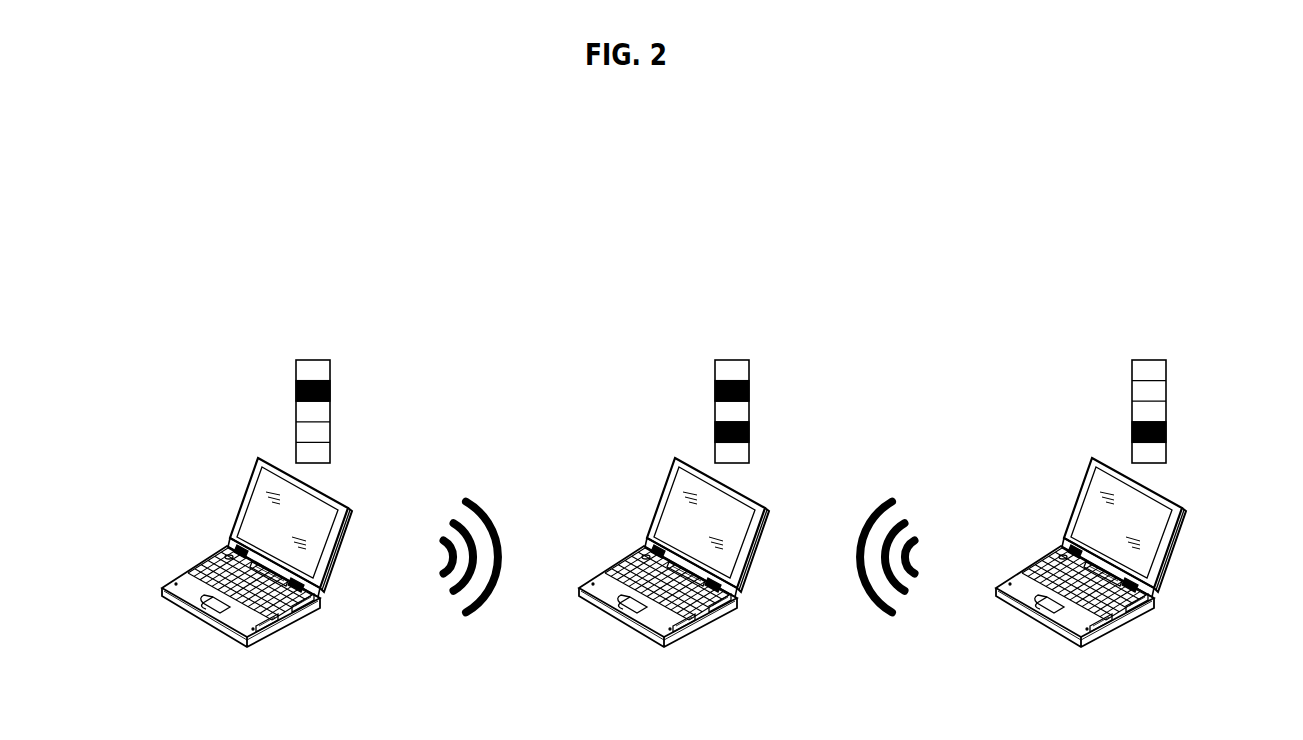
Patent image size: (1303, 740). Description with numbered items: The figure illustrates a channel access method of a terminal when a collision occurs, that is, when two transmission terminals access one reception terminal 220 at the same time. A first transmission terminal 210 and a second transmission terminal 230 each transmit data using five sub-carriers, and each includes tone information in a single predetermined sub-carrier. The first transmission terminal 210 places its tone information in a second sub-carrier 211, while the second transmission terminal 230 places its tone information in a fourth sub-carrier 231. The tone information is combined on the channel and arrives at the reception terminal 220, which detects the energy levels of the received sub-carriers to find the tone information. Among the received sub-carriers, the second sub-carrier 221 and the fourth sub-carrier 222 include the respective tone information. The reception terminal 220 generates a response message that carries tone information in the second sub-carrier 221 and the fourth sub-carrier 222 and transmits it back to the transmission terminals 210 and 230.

The first transmission terminal 210 is at (282, 456).
The second sub-carrier 211 is at (330, 390).
The reception terminal 220 is at (700, 456).
The second sub-carrier 221 is at (749, 390).
The fourth sub-carrier 222 is at (749, 432).
The second transmission terminal 230 is at (1117, 456).
The fourth sub-carrier 231 is at (1166, 432).